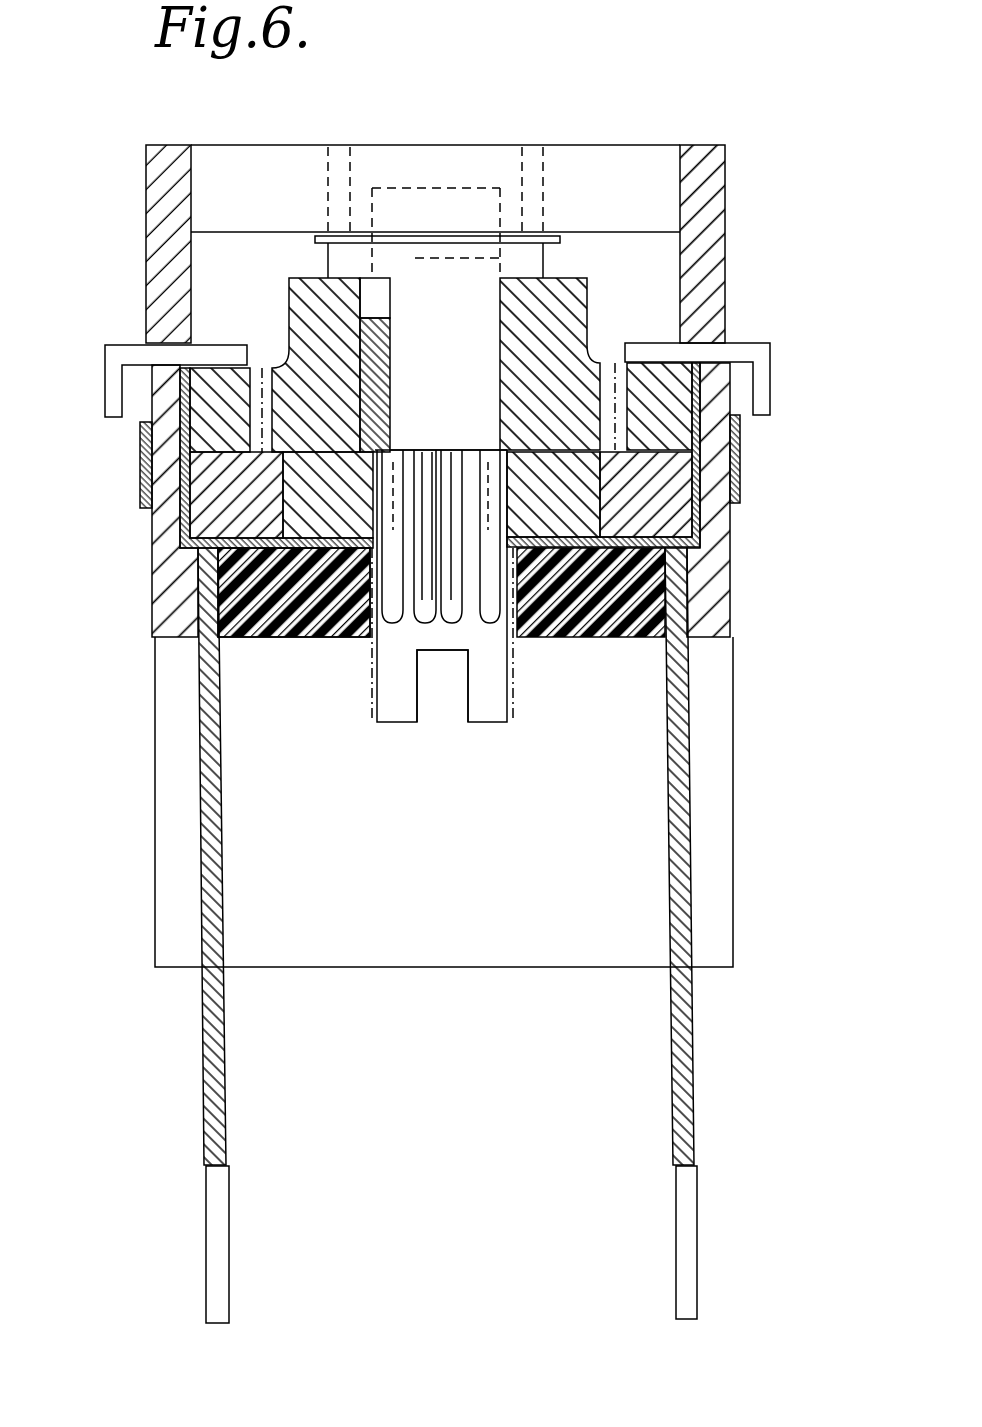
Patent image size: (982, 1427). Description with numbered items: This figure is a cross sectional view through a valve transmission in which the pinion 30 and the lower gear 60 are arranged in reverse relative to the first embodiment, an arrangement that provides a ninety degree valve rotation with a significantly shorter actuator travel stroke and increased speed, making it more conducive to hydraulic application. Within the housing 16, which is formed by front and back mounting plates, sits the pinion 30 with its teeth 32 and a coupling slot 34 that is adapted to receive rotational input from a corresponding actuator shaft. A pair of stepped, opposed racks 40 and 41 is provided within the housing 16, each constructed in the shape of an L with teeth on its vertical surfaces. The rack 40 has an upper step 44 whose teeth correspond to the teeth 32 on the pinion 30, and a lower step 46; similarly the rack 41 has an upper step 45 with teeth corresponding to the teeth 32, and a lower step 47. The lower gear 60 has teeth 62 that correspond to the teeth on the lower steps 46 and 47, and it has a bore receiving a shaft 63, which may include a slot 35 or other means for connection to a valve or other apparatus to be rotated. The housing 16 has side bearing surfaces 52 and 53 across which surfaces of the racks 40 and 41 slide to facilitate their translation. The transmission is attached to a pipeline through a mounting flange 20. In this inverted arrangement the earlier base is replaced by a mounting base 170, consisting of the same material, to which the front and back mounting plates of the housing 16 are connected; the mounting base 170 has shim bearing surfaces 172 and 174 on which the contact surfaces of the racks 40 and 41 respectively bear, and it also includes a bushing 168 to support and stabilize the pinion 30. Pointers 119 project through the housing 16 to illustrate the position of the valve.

The housing 16 is at (155, 217).
The mounting flange 20 is at (695, 815).
The pinion 30 is at (372, 715).
The teeth 32 is at (397, 627).
The coupling slot 34 is at (468, 685).
The slot 35 is at (458, 207).
The rack 40 is at (300, 483).
The rack 41 is at (568, 490).
The upper step 44 is at (218, 562).
The upper step 45 is at (610, 533).
The lower step 46 is at (217, 402).
The lower step 47 is at (667, 407).
The side bearing surface 52 is at (152, 490).
The side bearing surface 53 is at (675, 443).
The lower gear 60 is at (287, 277).
The teeth 62 is at (606, 362).
The shaft 63 is at (475, 343).
The pointer 119 is at (105, 360).
The bushing 168 is at (510, 616).
The mounting base 170 is at (281, 563).
The shim bearing surface 172 is at (220, 597).
The shim bearing surface 174 is at (668, 598).